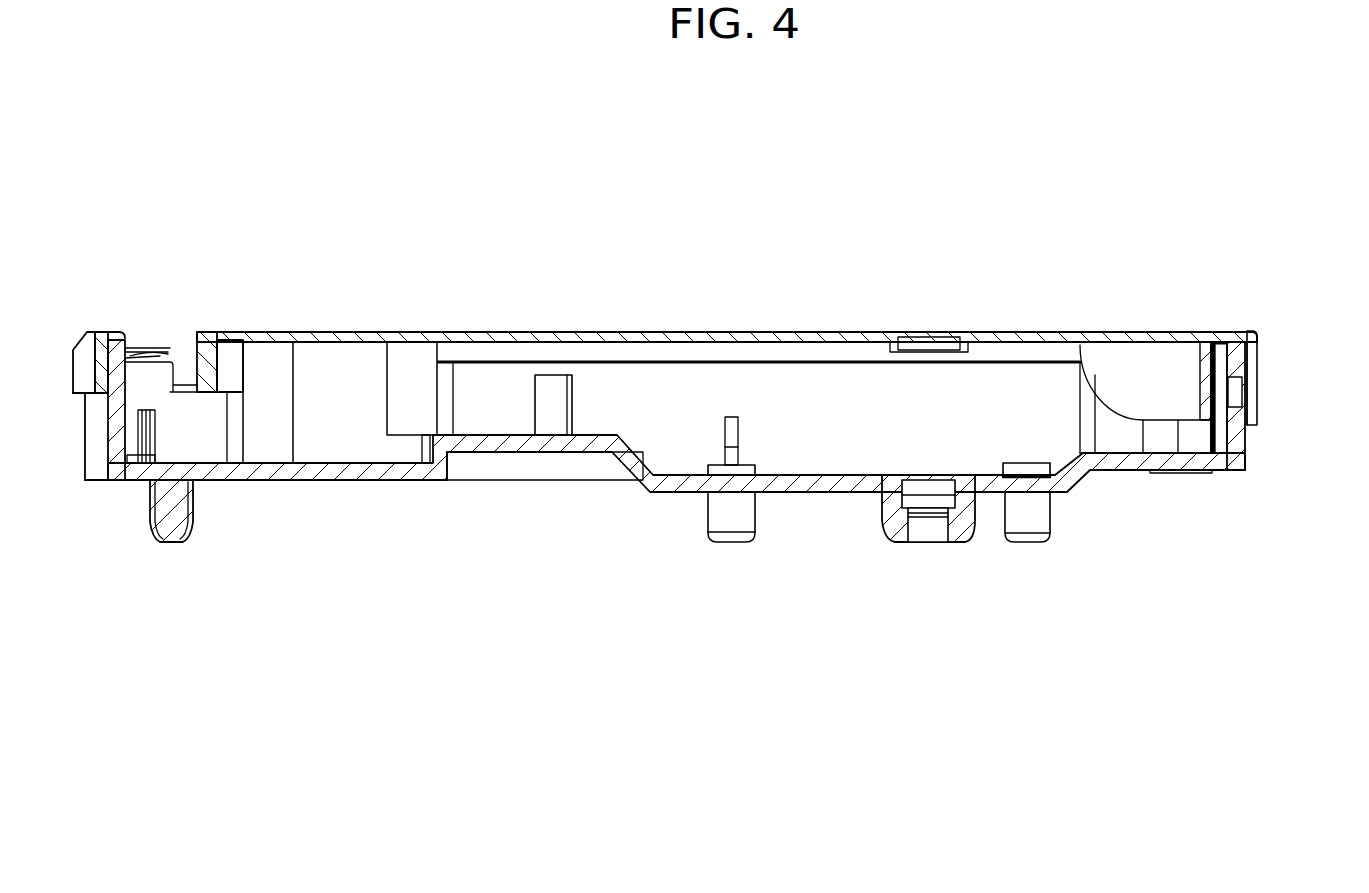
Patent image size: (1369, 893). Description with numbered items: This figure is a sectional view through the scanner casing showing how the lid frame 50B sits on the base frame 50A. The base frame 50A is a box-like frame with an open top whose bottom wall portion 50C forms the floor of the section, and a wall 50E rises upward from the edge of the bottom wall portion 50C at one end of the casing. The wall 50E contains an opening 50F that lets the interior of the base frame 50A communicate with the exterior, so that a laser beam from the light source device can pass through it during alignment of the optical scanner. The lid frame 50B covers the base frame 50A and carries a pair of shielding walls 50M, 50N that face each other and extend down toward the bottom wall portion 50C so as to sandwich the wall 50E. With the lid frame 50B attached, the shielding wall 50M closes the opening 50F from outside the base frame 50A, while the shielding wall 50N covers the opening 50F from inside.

The base frame 50A is at (350, 481).
The lid frame 50B is at (350, 331).
The bottom wall portion 50C is at (567, 447).
The wall 50E is at (1238, 357).
The opening 50F is at (1238, 392).
The shielding wall 50M is at (1250, 417).
The shielding wall 50N is at (1203, 377).